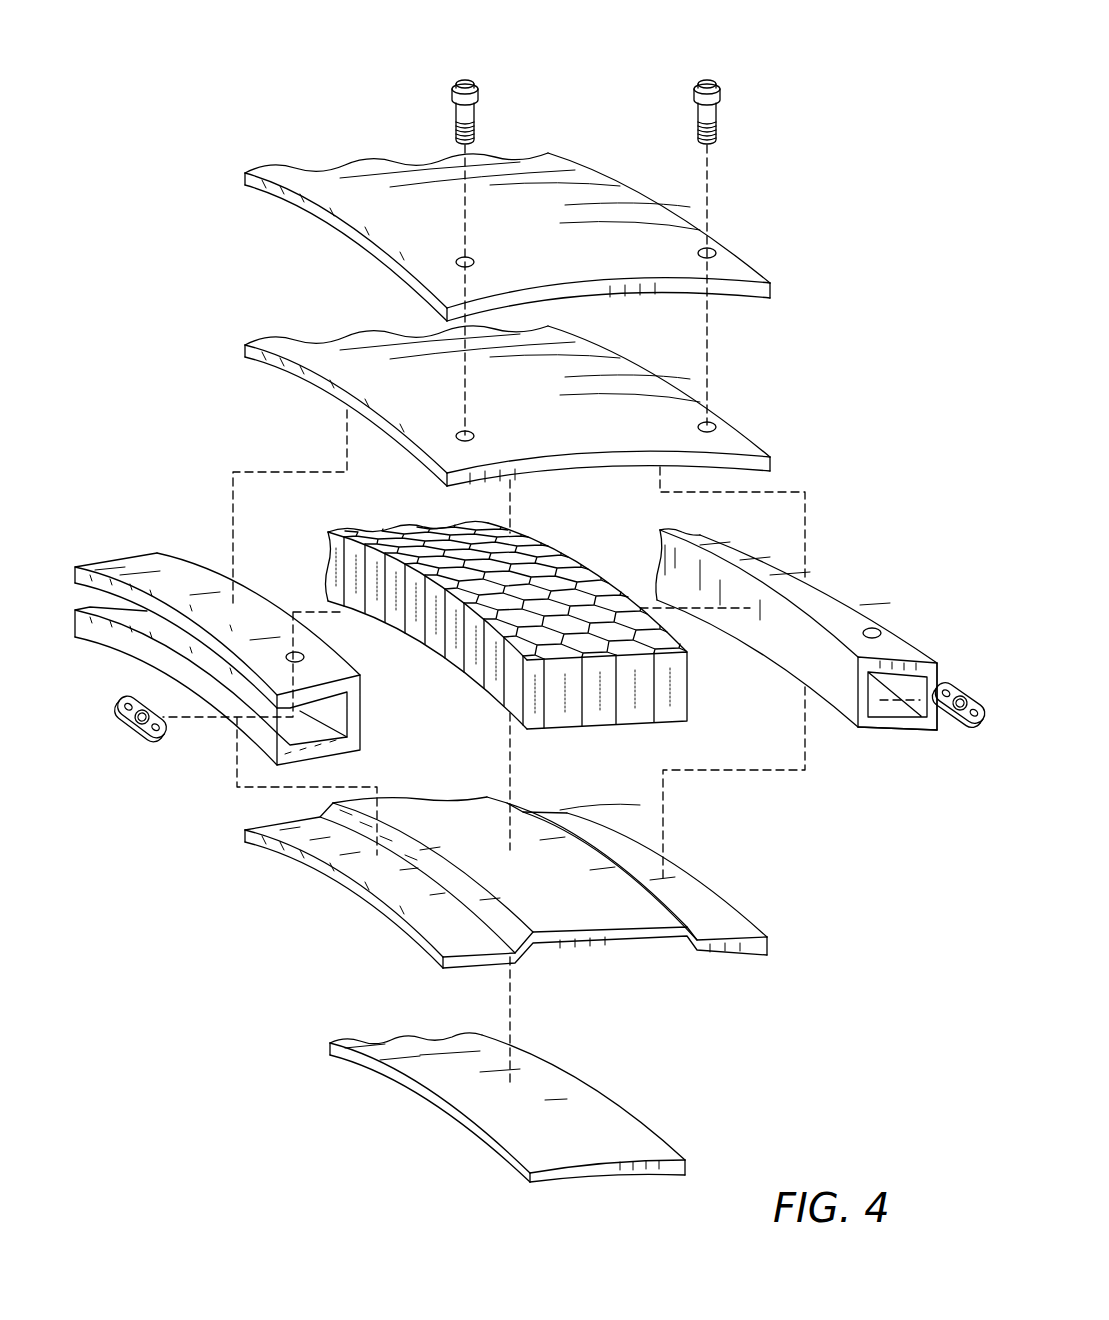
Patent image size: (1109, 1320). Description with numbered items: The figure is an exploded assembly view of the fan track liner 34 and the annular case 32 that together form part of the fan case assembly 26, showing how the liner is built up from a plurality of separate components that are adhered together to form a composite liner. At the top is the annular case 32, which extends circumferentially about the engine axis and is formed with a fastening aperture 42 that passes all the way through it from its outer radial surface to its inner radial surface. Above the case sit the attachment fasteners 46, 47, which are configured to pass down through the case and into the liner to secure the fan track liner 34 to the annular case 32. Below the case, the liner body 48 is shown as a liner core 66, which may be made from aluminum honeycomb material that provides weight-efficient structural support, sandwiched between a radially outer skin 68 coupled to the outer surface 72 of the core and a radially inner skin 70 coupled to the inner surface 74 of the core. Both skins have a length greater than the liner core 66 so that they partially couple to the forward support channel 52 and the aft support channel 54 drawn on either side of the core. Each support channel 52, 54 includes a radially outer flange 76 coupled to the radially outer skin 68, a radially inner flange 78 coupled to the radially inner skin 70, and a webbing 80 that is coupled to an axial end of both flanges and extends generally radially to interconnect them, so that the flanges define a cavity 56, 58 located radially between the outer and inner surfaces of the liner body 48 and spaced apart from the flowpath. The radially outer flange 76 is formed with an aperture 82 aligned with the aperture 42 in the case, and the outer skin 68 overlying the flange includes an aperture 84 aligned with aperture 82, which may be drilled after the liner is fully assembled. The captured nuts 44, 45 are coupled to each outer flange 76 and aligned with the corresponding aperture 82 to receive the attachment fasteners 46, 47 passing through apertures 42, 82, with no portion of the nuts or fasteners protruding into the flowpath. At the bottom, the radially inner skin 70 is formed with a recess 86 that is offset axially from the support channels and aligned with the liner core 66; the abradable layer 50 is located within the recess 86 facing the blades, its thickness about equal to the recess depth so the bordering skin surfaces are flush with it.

The fan case assembly 26 is at (755, 59).
The annular case 32 is at (590, 180).
The fan track liner 34 is at (880, 407).
The fastening aperture 42 is at (442, 265).
The captured nut 44 is at (141, 760).
The captured nut 45 is at (960, 742).
The attachment fastener 46 is at (432, 90).
The attachment fastener 47 is at (732, 103).
The liner body 48 is at (790, 413).
The abradable layer 50 is at (655, 1105).
The forward support channel 52 is at (155, 532).
The aft support channel 54 is at (834, 555).
The cavity 56 is at (135, 645).
The cavity 58 is at (939, 674).
The liner core 66 is at (422, 550).
The radially outer skin 68 is at (284, 334).
The radially inner skin 70 is at (747, 892).
The outer surface 72 is at (567, 577).
The inner surface 74 is at (623, 720).
The radially outer flange 76 is at (132, 565).
The radially inner flange 78 is at (342, 750).
The webbing 80 is at (357, 720).
The aperture 82 is at (320, 654).
The aperture 84 is at (442, 438).
The recess 86 is at (613, 951).